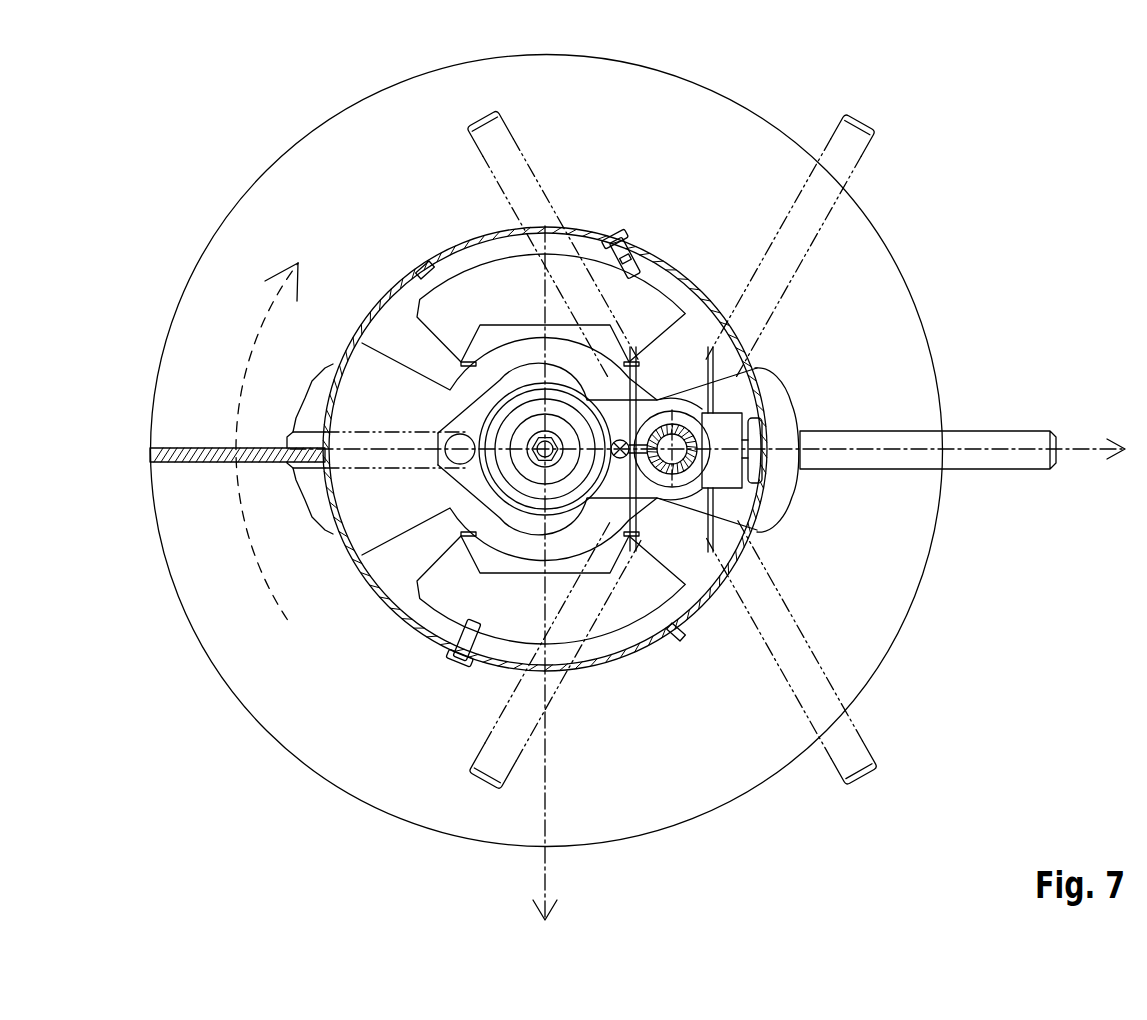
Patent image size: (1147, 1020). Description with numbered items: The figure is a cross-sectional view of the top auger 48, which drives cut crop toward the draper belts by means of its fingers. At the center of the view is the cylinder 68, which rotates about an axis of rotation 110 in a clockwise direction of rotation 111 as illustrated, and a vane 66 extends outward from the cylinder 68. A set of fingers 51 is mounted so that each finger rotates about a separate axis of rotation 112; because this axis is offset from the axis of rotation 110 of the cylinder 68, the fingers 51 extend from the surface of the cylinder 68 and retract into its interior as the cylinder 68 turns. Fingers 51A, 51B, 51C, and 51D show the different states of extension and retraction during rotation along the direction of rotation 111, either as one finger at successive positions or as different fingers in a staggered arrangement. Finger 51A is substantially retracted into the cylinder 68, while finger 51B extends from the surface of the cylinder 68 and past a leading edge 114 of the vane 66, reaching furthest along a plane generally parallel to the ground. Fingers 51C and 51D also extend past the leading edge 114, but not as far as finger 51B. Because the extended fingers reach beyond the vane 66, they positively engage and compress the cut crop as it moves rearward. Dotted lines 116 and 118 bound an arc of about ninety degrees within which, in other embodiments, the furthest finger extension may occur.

The top auger 48 is at (262, 162).
The fingers 51 is at (468, 115).
The finger 51A is at (367, 472).
The finger 51B is at (1010, 435).
The finger 51C is at (875, 158).
The finger 51D is at (876, 745).
The vane 66 is at (646, 134).
The cylinder 68 is at (397, 617).
The axis of rotation 110 is at (545, 449).
The direction of rotation 111 is at (235, 415).
The axis of rotation 112 is at (672, 449).
The leading edge 114 is at (948, 339).
The dotted line 116 is at (1085, 460).
The dotted line 118 is at (548, 876).